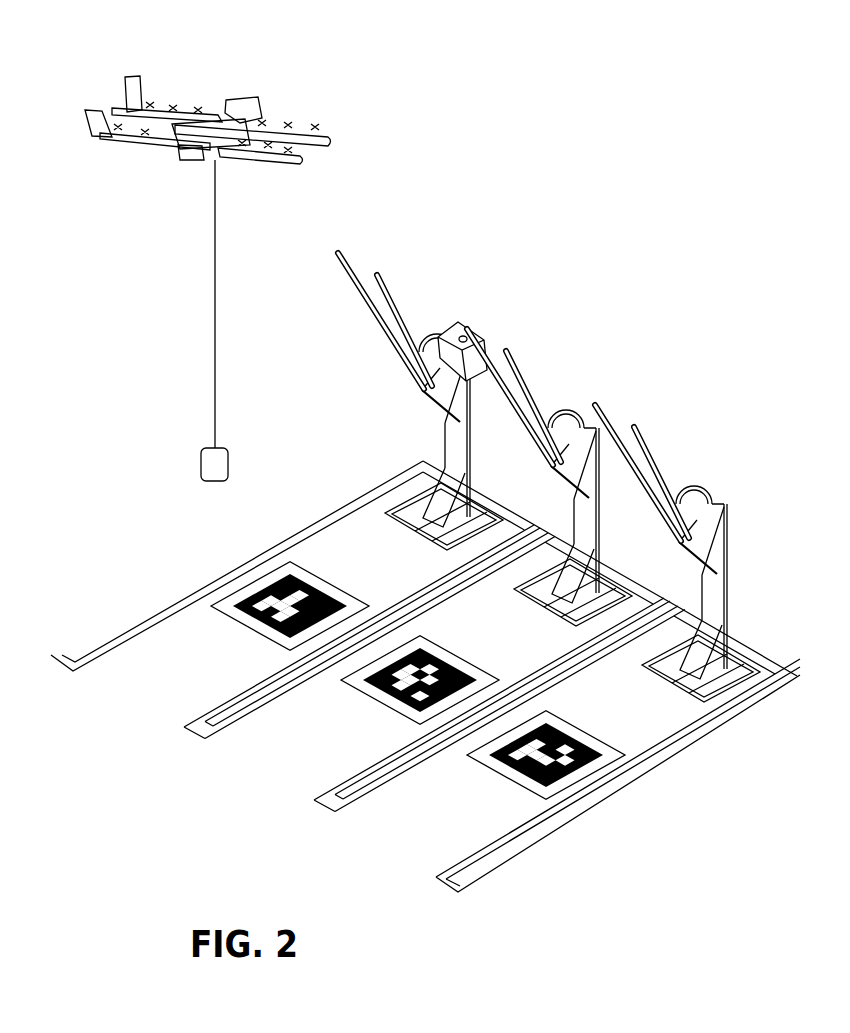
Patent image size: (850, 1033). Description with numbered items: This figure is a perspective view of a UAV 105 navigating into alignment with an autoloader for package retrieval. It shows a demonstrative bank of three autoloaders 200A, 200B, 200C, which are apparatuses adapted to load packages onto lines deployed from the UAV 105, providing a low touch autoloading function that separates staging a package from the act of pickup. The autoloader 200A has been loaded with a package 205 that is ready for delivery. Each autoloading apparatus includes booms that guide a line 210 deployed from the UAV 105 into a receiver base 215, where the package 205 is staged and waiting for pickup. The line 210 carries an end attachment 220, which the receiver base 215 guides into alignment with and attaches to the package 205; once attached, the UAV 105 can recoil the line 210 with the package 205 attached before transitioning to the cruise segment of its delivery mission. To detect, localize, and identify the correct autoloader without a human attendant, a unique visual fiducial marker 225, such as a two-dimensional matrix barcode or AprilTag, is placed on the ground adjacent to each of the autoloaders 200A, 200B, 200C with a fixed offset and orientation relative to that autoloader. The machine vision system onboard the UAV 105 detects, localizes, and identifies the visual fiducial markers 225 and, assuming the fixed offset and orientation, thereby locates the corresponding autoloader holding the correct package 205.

The UAV 105 is at (258, 100).
The package 205 is at (472, 313).
The autoloader 200A is at (533, 263).
The autoloader 200B is at (624, 332).
The autoloader 200C is at (758, 418).
The line 210 is at (213, 300).
The receiver base 215 is at (430, 412).
The end attachment 220 is at (200, 465).
The visual fiducial marker 225 is at (240, 627).